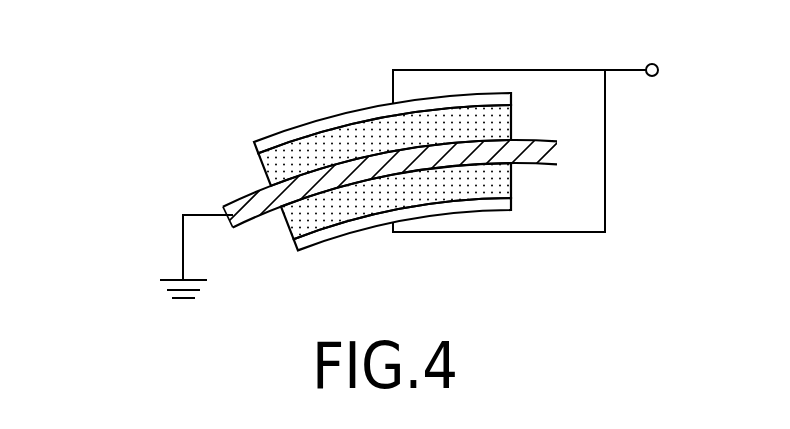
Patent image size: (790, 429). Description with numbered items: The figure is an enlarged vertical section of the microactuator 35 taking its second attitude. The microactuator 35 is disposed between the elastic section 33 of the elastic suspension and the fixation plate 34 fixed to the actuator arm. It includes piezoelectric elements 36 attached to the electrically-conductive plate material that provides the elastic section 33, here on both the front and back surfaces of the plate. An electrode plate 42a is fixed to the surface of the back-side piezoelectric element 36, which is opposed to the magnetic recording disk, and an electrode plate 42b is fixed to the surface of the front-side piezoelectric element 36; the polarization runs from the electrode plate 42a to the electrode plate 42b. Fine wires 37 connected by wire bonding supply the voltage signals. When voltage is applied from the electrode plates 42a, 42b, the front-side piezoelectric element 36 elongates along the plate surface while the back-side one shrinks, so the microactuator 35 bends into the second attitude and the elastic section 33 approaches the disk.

The elastic section 33 is at (228, 204).
The fixation plate 34 is at (542, 140).
The microactuator 35 is at (418, 160).
The piezoelectric element 36 is at (263, 167).
The fine wire 37 is at (418, 70).
The electrode plate 42a is at (366, 227).
The electrode plate 42b is at (358, 113).